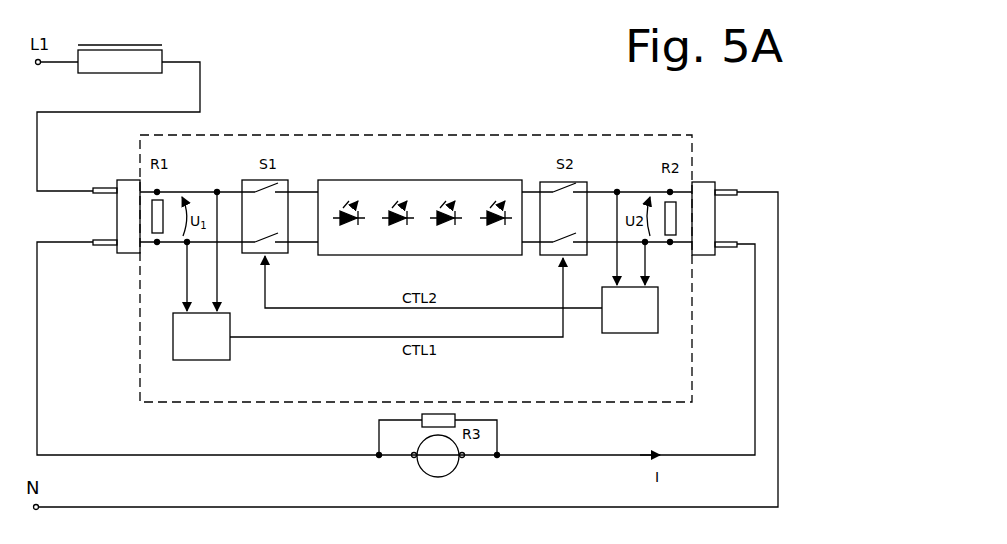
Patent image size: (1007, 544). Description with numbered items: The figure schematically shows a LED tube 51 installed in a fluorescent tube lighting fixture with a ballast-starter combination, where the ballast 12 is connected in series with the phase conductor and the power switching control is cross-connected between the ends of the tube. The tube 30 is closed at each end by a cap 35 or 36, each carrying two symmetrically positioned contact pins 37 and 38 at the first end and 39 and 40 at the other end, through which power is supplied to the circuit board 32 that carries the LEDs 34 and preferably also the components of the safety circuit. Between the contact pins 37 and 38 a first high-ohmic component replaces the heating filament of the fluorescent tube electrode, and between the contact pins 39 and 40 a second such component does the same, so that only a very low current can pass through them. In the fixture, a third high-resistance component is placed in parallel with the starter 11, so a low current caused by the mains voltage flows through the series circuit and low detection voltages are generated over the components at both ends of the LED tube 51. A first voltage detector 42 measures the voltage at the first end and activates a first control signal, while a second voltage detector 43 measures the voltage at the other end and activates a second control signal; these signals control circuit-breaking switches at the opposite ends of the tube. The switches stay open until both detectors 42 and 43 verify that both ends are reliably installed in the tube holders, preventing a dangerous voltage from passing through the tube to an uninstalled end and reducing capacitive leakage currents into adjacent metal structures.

The starter 11 is at (422, 473).
The inductor (ballast) L 12 is at (123, 75).
The tube 30 is at (520, 135).
The circuit board 32 is at (434, 236).
The LEDs 34 is at (350, 224).
The cap 35 is at (138, 181).
The cap 36 is at (707, 182).
The contact pin 37 is at (93, 190).
The contact pin 38 is at (105, 246).
The contact pin 39 is at (735, 190).
The contact pin 40 is at (728, 248).
The voltage detector 42 is at (230, 360).
The voltage detector 43 is at (602, 333).
The LED tube 51 is at (445, 122).